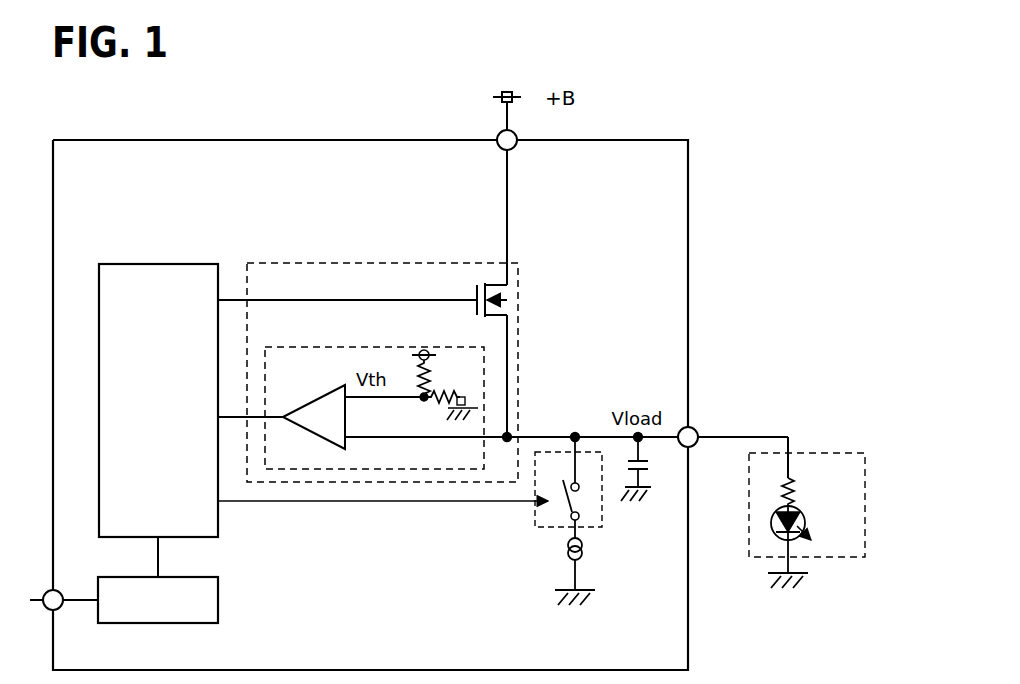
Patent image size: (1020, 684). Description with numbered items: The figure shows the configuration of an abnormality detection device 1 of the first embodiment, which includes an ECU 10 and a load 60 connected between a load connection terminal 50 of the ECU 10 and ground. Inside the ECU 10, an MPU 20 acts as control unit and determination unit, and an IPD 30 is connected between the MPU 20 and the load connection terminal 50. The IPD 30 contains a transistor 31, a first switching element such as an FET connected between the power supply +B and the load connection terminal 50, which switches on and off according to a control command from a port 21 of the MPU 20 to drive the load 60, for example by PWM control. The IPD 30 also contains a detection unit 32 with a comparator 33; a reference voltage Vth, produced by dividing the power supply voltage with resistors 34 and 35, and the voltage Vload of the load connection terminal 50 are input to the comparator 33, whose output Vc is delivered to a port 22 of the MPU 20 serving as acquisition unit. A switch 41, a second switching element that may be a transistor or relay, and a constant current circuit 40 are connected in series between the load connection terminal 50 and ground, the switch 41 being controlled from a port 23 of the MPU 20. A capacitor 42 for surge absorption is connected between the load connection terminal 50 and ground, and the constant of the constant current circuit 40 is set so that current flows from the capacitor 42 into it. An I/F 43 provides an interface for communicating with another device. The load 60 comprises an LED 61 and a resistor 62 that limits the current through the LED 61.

The abnormality detection device 1 is at (684, 122).
The ECU 10 is at (345, 140).
The MPU 20 is at (165, 264).
The port 21 is at (218, 302).
The port 22 is at (218, 417).
The port 23 is at (218, 500).
The IPD 30 is at (365, 263).
The transistor 31 is at (477, 292).
The detection unit 32 is at (350, 347).
The comparator 33 is at (318, 395).
The resistor 34 is at (430, 385).
The resistor 35 is at (435, 404).
The constant current circuit 40 is at (568, 551).
The switch 41 is at (533, 500).
The capacitor 42 is at (650, 465).
The I/F 43 is at (200, 577).
The load connection terminal 50 is at (697, 430).
The load 60 is at (808, 496).
The LED 61 is at (808, 522).
The resistor 62 is at (796, 485).